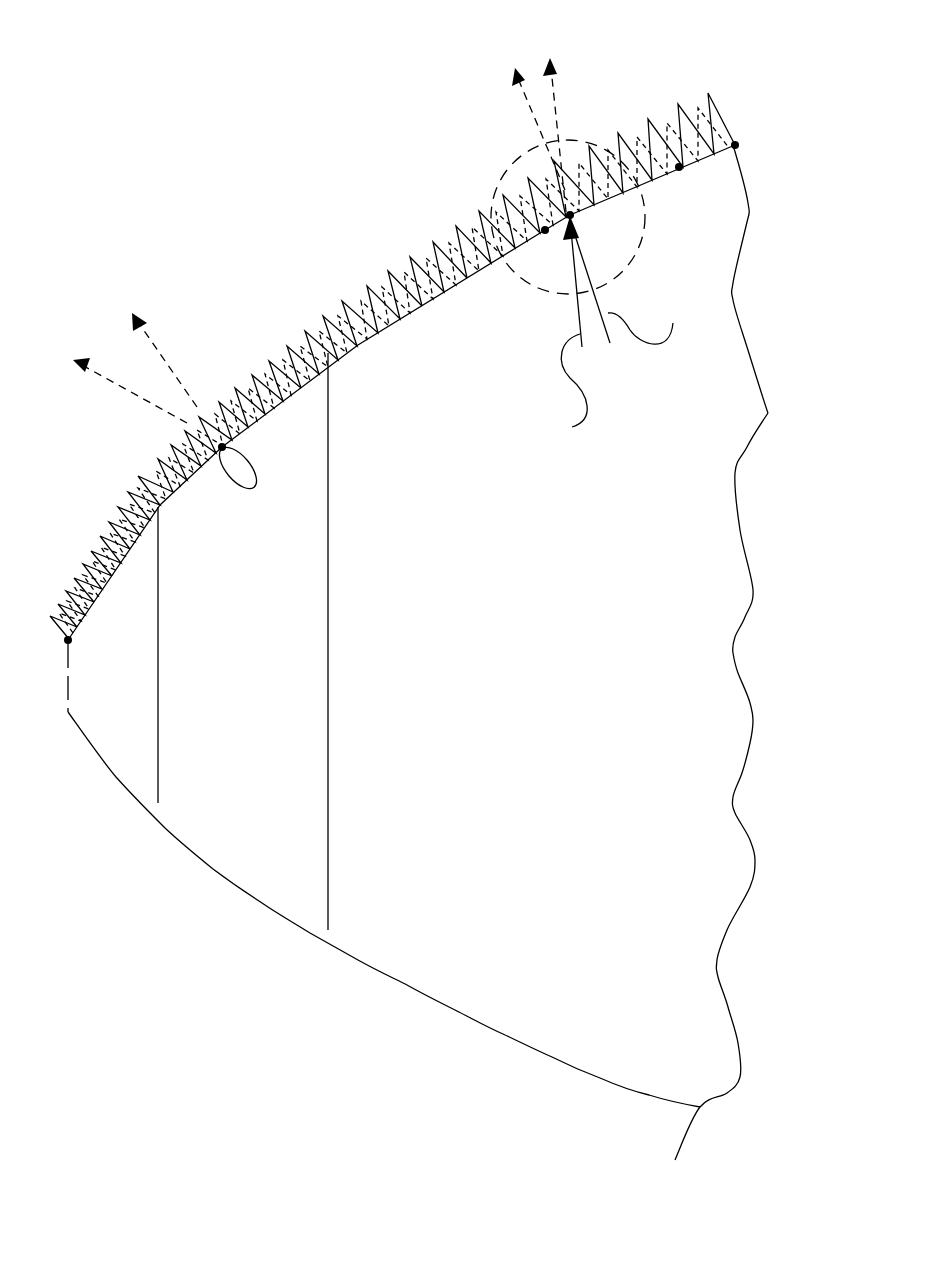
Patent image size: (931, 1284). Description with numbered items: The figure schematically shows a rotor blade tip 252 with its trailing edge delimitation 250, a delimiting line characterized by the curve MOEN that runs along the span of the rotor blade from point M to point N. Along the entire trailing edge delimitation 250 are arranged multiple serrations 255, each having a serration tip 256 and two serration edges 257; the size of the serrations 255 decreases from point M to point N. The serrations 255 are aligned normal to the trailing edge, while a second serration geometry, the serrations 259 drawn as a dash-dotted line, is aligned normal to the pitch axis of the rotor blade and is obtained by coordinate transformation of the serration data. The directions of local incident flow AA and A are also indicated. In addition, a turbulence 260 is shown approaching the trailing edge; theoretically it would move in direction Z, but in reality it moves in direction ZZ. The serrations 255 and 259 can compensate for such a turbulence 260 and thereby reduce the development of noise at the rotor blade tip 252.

The trailing edge delimitation 250 is at (361, 360).
The rotor blade tip 252 is at (207, 161).
The serrations 255 is at (713, 118).
The serration tip 256 is at (404, 303).
The serration edges 257 is at (447, 267).
The serrations 259 is at (728, 116).
The turbulence 260 is at (257, 490).